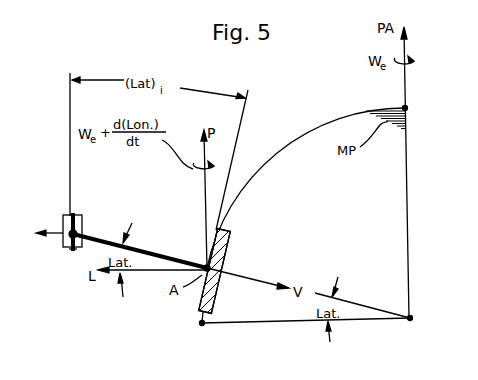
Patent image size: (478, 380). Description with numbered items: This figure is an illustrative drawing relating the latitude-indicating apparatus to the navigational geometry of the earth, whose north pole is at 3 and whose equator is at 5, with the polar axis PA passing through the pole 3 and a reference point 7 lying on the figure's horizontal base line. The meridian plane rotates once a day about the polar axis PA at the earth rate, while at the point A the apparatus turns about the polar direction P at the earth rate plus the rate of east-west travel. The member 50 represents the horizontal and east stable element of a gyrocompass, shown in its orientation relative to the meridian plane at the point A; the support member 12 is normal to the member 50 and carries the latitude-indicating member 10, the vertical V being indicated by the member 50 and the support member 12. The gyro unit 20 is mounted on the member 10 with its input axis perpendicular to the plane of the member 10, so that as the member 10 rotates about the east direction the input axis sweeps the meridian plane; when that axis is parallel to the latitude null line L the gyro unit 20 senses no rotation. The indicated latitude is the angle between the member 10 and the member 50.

The north pole 3 is at (405, 108).
The equator 5 is at (198, 326).
The reference point 7 is at (408, 320).
The latitude-indicating member 10 is at (71, 213).
The support member 12 is at (160, 249).
The gyro unit 20 is at (61, 243).
The stable element 50 is at (218, 298).